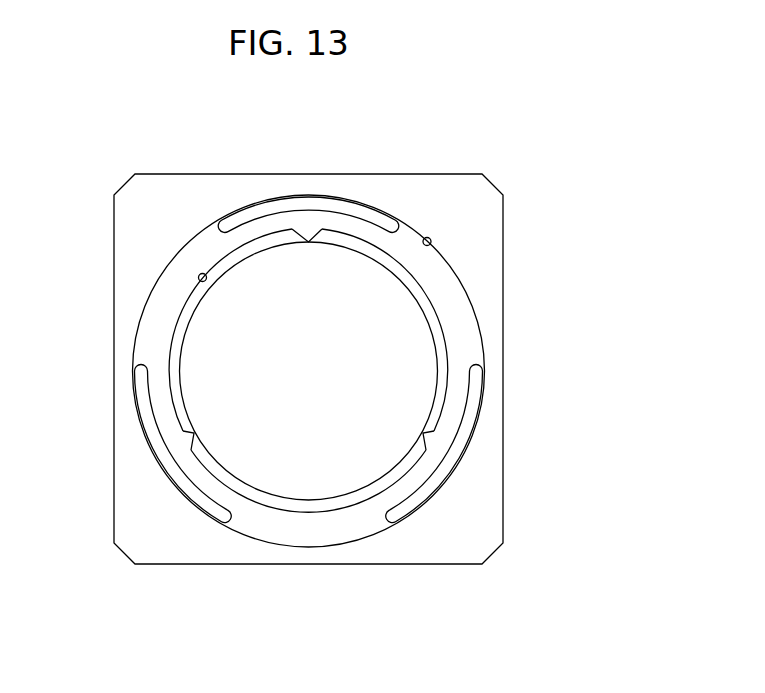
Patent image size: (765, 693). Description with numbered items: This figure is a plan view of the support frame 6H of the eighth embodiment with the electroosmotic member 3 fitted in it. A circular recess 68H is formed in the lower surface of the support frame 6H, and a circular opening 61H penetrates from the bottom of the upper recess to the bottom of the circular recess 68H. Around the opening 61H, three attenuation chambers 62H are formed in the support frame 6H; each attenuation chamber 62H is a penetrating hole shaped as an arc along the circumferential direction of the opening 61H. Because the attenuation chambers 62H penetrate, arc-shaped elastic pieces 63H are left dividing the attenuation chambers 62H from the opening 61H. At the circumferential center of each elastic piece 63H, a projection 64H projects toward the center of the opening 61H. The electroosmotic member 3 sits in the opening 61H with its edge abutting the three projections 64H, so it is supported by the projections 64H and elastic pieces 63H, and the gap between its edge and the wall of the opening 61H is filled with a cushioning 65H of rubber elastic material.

The support frame 6H is at (487, 222).
The electroosmotic member 3 is at (417, 350).
The cushioning 65H is at (420, 293).
The projection 64H is at (308, 232).
The attenuation chamber 62H is at (268, 205).
The elastic piece 63H is at (368, 227).
The circular opening 61H is at (205, 273).
The circular recess 68H is at (426, 238).